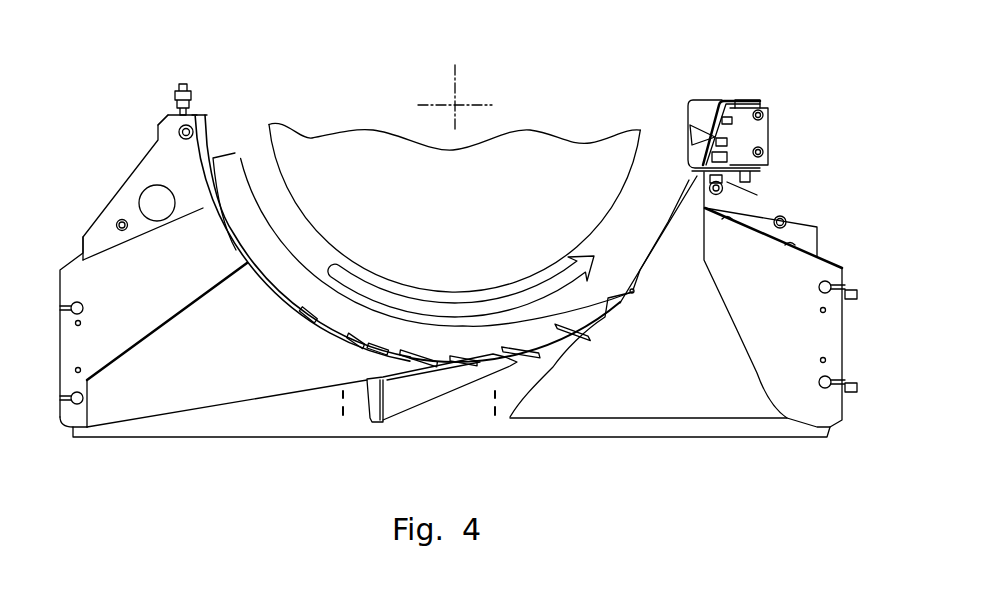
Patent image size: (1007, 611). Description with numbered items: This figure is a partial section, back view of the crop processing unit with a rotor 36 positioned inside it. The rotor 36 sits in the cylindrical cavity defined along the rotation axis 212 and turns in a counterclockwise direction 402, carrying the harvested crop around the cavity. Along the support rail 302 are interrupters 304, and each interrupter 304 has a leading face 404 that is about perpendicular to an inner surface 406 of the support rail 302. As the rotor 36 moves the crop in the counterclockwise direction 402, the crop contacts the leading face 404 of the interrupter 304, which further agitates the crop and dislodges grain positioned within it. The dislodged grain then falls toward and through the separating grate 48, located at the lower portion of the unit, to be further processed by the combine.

The rotation axis 212 is at (455, 105).
The rotor 36 is at (483, 236).
The leading face 404 is at (688, 152).
The interrupter 304 is at (684, 128).
The inner surface 406 is at (713, 103).
The support rail 302 is at (747, 111).
The separating grate 48 is at (417, 350).
The counterclockwise direction 402 is at (553, 292).